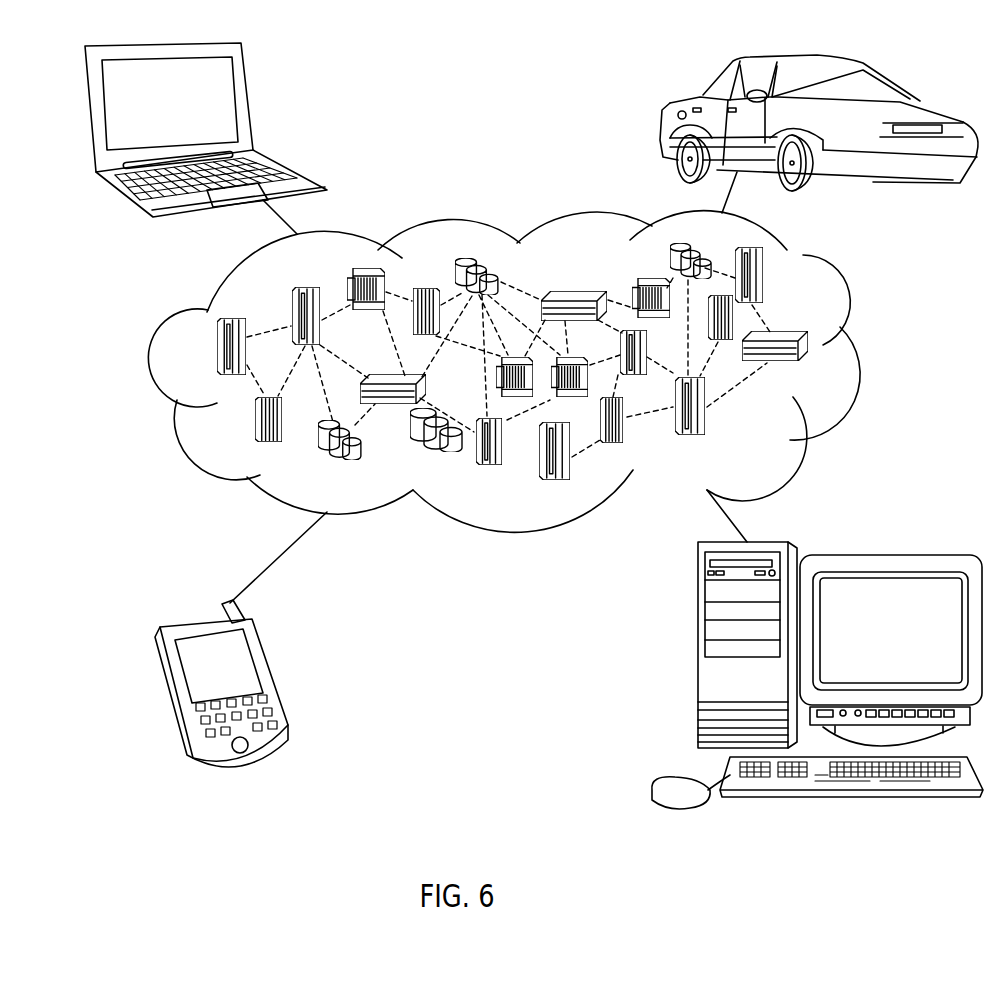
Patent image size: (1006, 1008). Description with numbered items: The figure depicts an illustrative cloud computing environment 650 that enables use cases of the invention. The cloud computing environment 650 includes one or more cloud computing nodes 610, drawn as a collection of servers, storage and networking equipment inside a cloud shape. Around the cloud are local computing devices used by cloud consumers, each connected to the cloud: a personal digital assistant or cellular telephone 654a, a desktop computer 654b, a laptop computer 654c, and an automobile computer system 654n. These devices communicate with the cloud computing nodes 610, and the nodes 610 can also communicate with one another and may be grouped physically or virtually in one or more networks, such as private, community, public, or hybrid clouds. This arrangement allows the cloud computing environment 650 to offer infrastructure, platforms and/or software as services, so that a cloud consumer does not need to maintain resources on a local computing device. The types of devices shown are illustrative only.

The cloud computing environment 650 is at (850, 292).
The cloud computing nodes 610 is at (838, 371).
The personal digital assistant (PDA) or cellular telephone 654a is at (268, 657).
The desktop computer 654b is at (698, 658).
The laptop computer 654c is at (247, 95).
The automobile computer system 654n is at (674, 103).